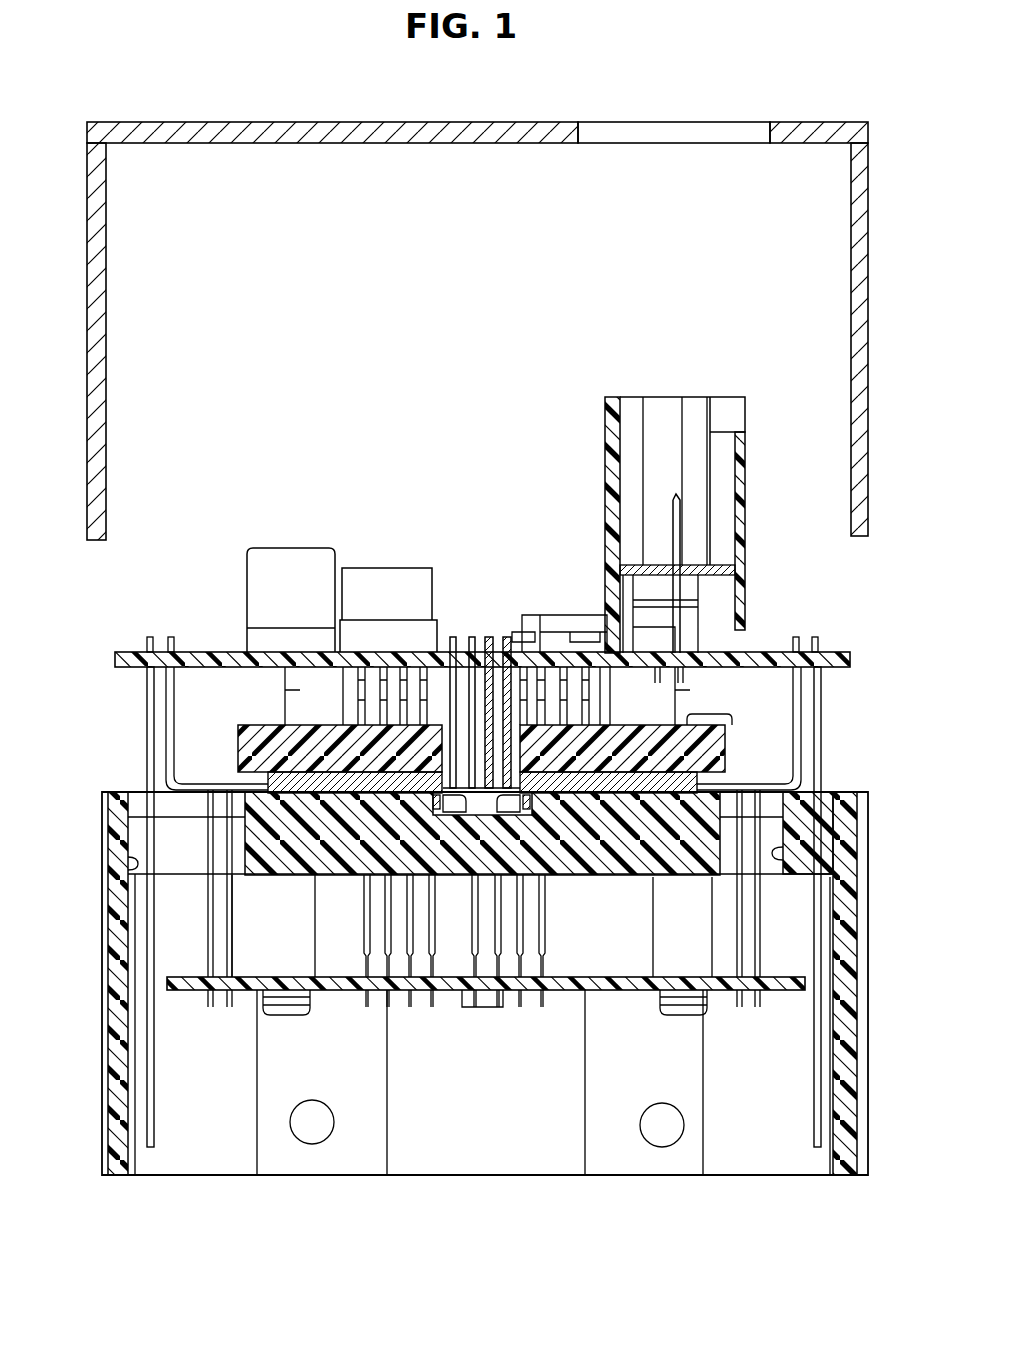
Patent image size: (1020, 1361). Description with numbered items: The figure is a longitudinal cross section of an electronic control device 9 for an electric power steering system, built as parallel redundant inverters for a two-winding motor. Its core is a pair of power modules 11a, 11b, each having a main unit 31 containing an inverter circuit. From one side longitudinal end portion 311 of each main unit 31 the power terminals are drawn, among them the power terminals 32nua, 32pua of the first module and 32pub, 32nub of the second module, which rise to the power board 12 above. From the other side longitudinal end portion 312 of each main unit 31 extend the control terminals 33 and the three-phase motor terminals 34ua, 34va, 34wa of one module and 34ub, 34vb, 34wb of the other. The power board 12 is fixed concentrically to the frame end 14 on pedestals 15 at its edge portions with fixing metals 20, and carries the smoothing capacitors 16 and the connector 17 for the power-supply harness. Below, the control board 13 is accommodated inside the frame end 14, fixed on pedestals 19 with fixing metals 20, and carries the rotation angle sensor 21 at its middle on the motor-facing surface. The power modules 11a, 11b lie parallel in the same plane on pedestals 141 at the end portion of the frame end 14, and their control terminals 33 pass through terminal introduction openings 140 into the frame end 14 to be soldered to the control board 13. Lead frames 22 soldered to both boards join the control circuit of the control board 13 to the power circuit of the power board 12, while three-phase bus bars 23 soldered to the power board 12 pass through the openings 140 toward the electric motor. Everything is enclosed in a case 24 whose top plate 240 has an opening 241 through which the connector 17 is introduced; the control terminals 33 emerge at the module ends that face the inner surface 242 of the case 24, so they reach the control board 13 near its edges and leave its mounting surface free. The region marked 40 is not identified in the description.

The electronic control device 9 is at (162, 1225).
The power module 11a is at (331, 727).
The power module 11b is at (628, 730).
The power board 12 is at (225, 652).
The control board 13 is at (165, 980).
The frame end 14 is at (107, 1052).
The terminal introduction opening 140 is at (128, 863).
The pedestal 141 is at (318, 808).
The pedestal 15 is at (285, 690).
The smoothing capacitor 16 is at (290, 548).
The connector 17 is at (633, 395).
The pedestal 19 is at (307, 960).
The fixing metal 20 is at (288, 1012).
The rotation angle sensor 21 is at (485, 1008).
The lead frame 22 is at (404, 690).
The three-phase bus bar 23 is at (154, 1052).
The case 24 is at (454, 331).
The top plate 240 is at (468, 128).
The opening 241 is at (652, 128).
The inner surface 242 is at (107, 338).
The main unit 31 is at (240, 730).
The one side longitudinal end portion 311 is at (460, 802).
The other side longitudinal end portion 312 is at (268, 780).
The power terminal 32nua is at (453, 637).
The power terminal 32pub is at (472, 637).
The power terminal 32pua is at (489, 637).
The power terminal 32nub is at (507, 637).
The control terminal 33 is at (208, 834).
The three-phase motor terminal 34ua is at (126, 657).
The three-phase motor terminal 34va is at (160, 644).
The three-phase motor terminal 34wa is at (160, 644).
The three-phase motor terminal 34ub is at (842, 649).
The three-phase motor terminal 34vb is at (805, 644).
The three-phase motor terminal 34wb is at (805, 644).
The housing block 40 is at (786, 853).